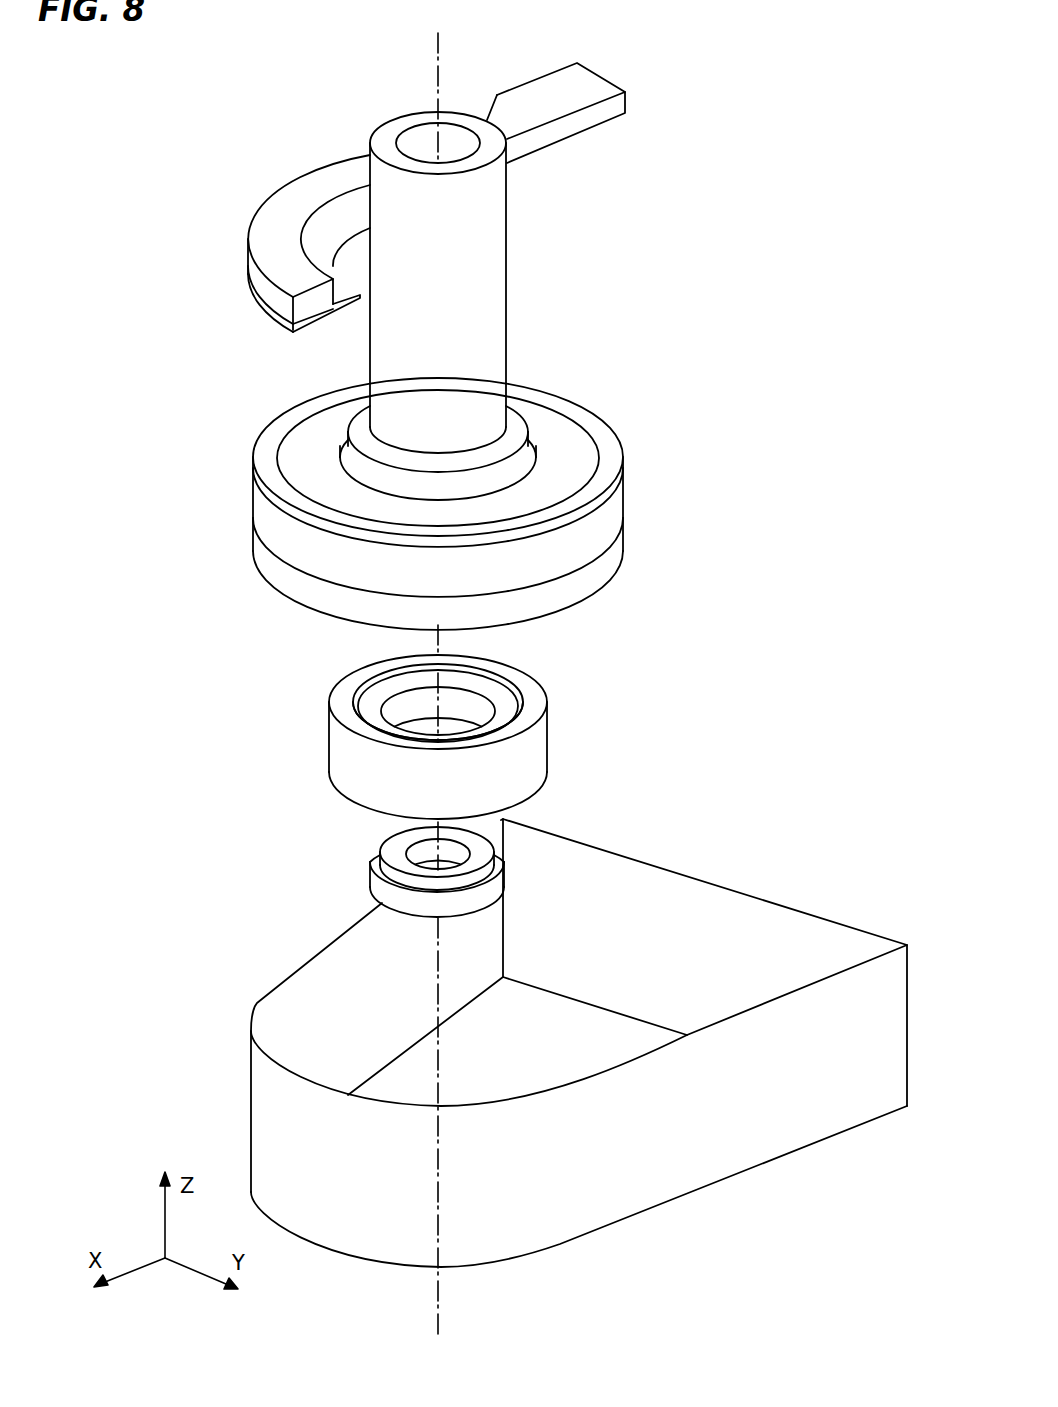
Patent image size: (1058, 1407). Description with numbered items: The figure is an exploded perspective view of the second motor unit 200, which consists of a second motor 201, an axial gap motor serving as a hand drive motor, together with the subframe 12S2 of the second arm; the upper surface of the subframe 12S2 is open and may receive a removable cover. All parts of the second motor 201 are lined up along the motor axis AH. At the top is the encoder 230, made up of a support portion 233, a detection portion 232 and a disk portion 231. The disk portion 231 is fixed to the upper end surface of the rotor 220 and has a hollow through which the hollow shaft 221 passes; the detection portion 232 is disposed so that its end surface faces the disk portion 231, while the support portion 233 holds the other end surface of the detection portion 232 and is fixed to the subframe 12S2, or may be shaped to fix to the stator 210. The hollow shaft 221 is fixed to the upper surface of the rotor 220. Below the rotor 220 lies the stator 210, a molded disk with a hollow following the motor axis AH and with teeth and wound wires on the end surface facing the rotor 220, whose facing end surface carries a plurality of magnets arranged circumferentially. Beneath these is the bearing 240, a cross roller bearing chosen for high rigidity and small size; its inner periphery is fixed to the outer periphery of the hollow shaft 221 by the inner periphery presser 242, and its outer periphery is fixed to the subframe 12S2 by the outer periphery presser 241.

The motor axis AH is at (440, 78).
The second motor unit 200 is at (818, 270).
The second motor 201 is at (682, 353).
The hollow shaft 221 is at (483, 300).
The encoder 230 is at (168, 193).
The support portion 233 is at (268, 248).
The detection portion 232 is at (283, 318).
The disk portion 231 is at (312, 425).
The rotor 220 is at (258, 507).
The stator 210 is at (268, 563).
The bearing 240 is at (373, 703).
The outer periphery presser 241 is at (537, 692).
The inner periphery presser 242 is at (396, 849).
The subframe 12S2 is at (689, 876).